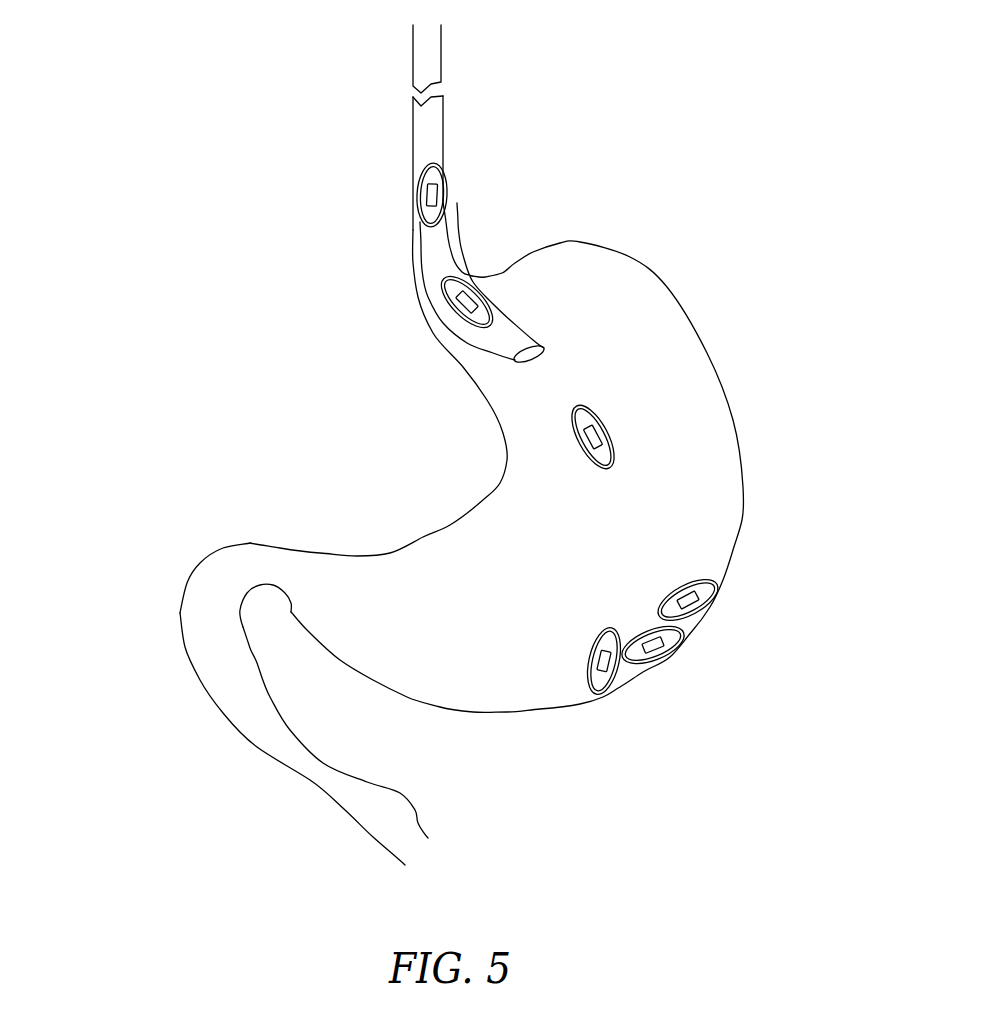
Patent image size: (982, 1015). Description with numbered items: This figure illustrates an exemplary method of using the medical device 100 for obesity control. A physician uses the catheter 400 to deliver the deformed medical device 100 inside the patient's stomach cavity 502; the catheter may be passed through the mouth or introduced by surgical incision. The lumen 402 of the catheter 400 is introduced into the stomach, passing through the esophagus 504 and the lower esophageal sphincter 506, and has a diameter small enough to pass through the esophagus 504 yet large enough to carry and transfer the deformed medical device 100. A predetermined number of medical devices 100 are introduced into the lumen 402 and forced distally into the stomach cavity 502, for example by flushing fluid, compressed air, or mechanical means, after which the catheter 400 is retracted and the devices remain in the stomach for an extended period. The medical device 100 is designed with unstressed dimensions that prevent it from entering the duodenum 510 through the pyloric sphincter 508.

The medical device 100 is at (618, 426).
The catheter 400 is at (456, 58).
The lumen 402 is at (446, 155).
The stomach cavity 502 is at (748, 564).
The esophagus 504 is at (469, 223).
The lower esophageal sphincter 506 is at (398, 298).
The pyloric sphincter 508 is at (236, 563).
The duodenum 510 is at (194, 640).